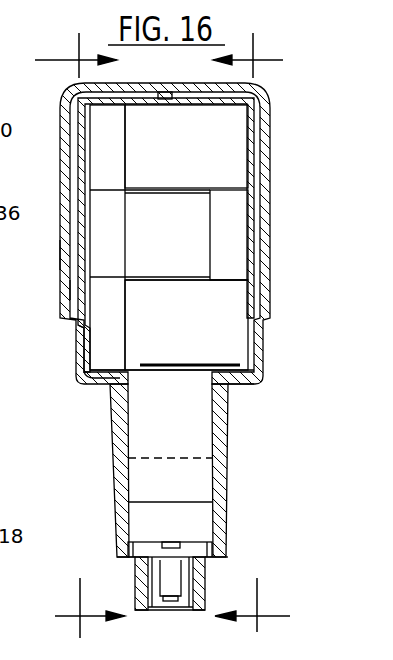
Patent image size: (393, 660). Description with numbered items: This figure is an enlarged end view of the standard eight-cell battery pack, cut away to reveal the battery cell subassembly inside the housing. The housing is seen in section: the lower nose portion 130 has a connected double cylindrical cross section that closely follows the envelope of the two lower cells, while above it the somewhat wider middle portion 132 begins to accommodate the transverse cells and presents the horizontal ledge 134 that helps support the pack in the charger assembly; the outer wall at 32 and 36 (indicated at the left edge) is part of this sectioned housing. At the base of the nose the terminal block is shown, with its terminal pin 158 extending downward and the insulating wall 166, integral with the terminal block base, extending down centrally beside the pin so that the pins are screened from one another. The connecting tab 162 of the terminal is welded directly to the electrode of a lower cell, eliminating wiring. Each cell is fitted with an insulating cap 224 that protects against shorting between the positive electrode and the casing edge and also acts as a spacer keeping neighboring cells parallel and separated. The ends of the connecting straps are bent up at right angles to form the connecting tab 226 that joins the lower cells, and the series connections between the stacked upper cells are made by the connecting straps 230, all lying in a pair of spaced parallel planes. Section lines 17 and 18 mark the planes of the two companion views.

The section line 17- 17 is at (80, 339).
The section line 18- 18 is at (254, 339).
The nose portion 130 is at (109, 452).
The middle portion 132 is at (72, 373).
The horizontal ledge 134 is at (240, 386).
The terminal pin 158 is at (180, 601).
The connecting tab 162 is at (172, 541).
The insulating wall 166 is at (155, 612).
The insulating cap 224 is at (107, 125).
The connecting tab 226 is at (79, 343).
The connecting strap 230 is at (79, 157).
The wall portion 36 is at (61, 253).
The wall portion 32 is at (35, 293).